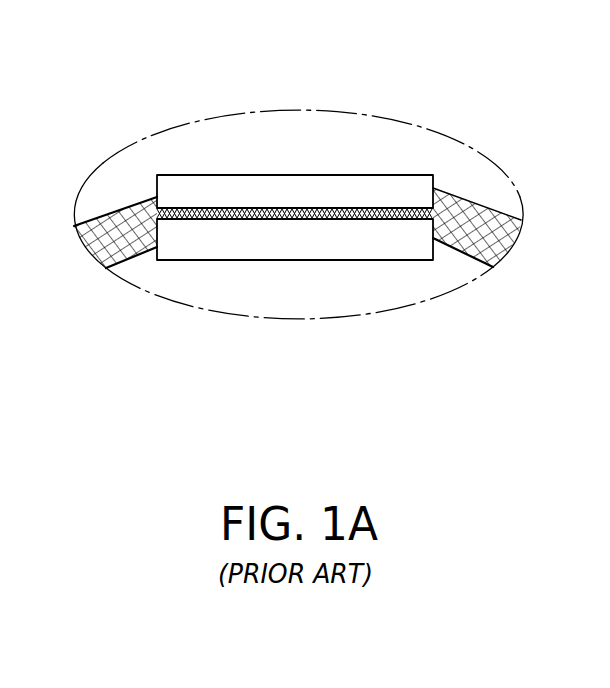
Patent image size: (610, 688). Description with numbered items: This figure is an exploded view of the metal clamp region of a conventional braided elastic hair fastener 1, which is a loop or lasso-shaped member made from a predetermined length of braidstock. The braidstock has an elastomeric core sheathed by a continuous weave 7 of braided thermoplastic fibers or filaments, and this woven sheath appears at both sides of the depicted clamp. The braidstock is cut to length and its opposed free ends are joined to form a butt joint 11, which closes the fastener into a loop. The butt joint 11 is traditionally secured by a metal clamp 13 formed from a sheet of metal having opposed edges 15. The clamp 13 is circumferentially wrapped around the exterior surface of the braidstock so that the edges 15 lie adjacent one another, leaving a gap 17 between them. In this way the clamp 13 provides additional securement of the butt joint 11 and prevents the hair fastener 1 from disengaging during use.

The fastener 1 is at (478, 98).
The continuous weave 7 is at (521, 222).
The butt joint 11 is at (340, 260).
The metal clamp 13 is at (218, 175).
The opposed edges 15 is at (237, 213).
The gap 17 is at (363, 212).